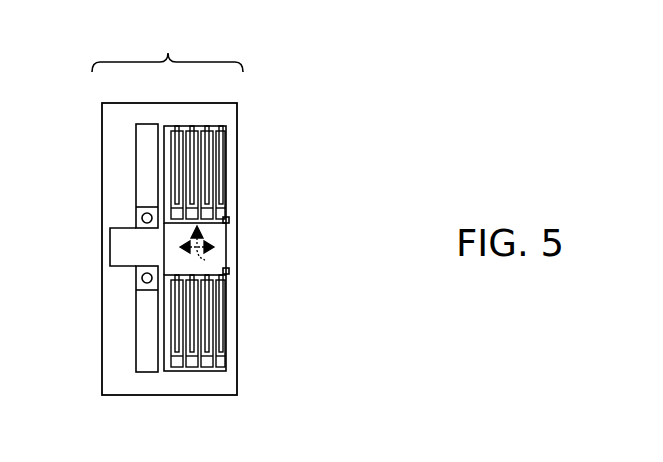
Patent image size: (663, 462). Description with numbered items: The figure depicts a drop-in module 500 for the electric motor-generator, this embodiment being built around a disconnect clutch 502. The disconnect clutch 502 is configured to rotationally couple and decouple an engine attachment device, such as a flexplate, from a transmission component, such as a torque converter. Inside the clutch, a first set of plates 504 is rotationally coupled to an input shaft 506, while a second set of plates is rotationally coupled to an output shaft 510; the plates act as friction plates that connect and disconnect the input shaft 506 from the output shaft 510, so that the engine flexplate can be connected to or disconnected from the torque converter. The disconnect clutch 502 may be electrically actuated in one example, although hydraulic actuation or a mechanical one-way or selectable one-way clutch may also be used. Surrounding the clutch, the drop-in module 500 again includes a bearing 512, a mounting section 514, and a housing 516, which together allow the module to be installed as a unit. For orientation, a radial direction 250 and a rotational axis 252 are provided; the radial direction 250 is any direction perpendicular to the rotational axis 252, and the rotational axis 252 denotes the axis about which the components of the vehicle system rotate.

The drop-in module 500 is at (167, 48).
The disconnect clutch 502 is at (236, 163).
The first set of plates 504 is at (169, 225).
The input shaft 506 is at (189, 146).
The output shaft 510 is at (213, 237).
The bearing 512 is at (140, 210).
The mounting section 514 is at (142, 162).
The housing 516 is at (101, 228).
The radial direction 250 is at (202, 233).
The rotational axis 252 is at (193, 265).